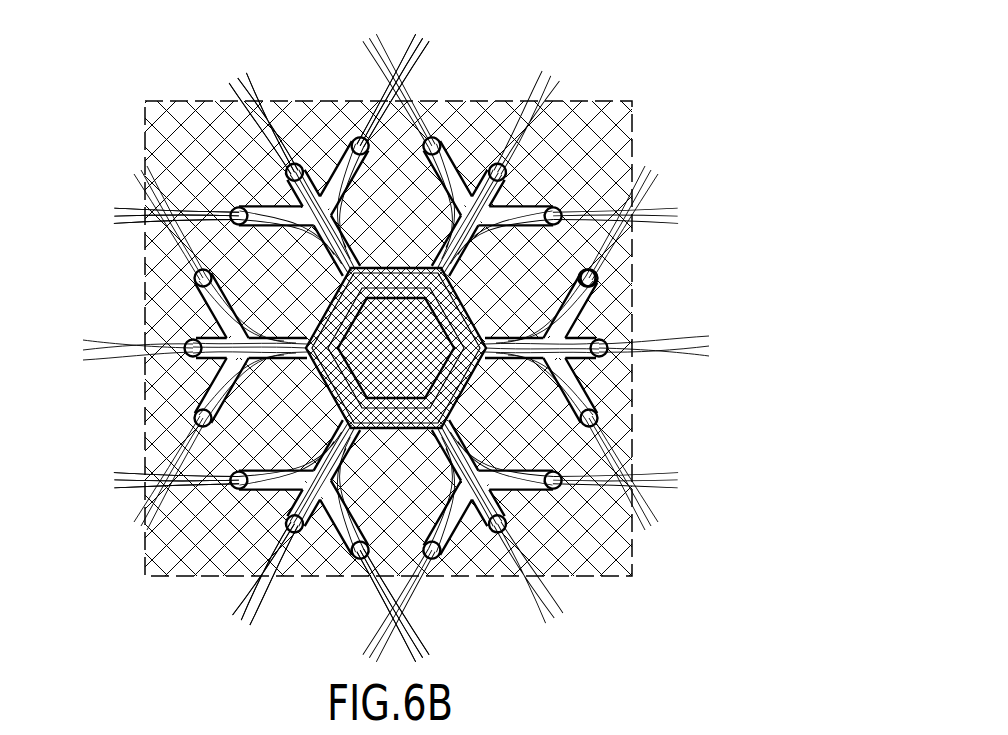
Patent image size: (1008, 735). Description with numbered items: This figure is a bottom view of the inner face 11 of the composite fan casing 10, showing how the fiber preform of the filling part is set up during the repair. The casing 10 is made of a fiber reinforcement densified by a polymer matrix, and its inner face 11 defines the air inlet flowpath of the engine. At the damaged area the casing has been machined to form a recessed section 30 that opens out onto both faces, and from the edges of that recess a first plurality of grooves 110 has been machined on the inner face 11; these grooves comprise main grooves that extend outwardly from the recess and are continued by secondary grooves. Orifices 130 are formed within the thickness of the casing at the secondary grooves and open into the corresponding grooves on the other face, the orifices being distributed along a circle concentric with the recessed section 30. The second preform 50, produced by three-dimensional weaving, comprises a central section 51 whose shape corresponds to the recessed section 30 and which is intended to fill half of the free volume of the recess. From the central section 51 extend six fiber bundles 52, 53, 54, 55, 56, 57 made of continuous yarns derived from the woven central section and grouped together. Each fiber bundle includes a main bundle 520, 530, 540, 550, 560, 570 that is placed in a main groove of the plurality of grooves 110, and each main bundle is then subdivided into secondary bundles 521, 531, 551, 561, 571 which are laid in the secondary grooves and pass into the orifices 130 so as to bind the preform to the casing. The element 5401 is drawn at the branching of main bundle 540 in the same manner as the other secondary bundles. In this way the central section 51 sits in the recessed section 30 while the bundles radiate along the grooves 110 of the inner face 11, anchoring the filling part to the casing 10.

The fan casing 10 is at (632, 130).
The inner face 11 is at (602, 135).
The recessed section 30 is at (315, 394).
The second preform 50 is at (336, 108).
The central section 51 is at (340, 303).
The fiber bundle 52 is at (273, 333).
The main bundle 520 is at (282, 356).
The secondary bundle 521 is at (122, 347).
The fiber bundle 53 is at (360, 228).
The main bundle 530 is at (325, 247).
The secondary bundle 531 is at (242, 90).
The fiber bundle 54 is at (462, 251).
The main bundle 540 is at (445, 250).
The upper-right arm external fiber bundle 5401 is at (387, 60).
The fiber bundle 55 is at (513, 330).
The main bundle 550 is at (515, 356).
The secondary bundle 551 is at (612, 423).
The fiber bundle 56 is at (513, 455).
The main bundle 560 is at (513, 490).
The secondary bundle 561 is at (547, 603).
The fiber bundle 57 is at (410, 468).
The main bundle 570 is at (345, 517).
The secondary bundle 571 is at (260, 590).
The first plurality of grooves 110 is at (222, 480).
The orifices 130 is at (596, 276).